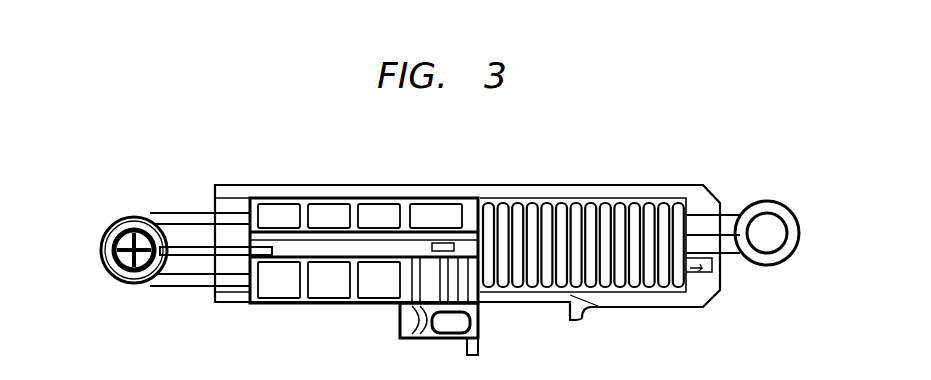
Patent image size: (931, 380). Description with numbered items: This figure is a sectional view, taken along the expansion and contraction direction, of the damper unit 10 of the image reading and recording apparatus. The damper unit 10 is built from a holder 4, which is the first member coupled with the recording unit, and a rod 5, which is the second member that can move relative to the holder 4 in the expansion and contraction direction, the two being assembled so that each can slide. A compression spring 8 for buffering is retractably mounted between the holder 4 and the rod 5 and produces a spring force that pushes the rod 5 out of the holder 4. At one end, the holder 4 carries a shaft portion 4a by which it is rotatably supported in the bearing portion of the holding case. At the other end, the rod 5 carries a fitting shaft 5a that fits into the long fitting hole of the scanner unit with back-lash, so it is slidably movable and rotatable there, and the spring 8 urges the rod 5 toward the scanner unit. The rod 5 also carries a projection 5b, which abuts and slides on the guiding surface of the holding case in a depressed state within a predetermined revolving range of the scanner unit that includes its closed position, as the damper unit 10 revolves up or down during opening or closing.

The damper unit 10 is at (283, 186).
The holder 4 is at (415, 190).
The shaft portion 4a is at (767, 225).
The rod 5 is at (190, 238).
The fitting shaft 5a is at (122, 290).
The projection 5b is at (420, 326).
The compression spring 8 is at (532, 292).